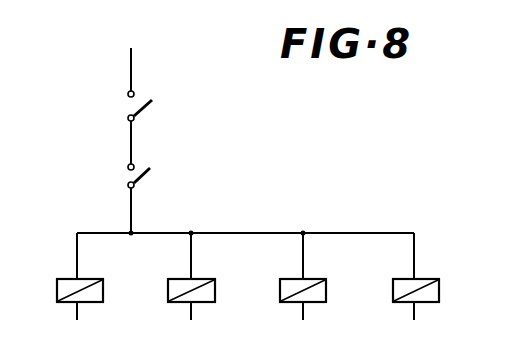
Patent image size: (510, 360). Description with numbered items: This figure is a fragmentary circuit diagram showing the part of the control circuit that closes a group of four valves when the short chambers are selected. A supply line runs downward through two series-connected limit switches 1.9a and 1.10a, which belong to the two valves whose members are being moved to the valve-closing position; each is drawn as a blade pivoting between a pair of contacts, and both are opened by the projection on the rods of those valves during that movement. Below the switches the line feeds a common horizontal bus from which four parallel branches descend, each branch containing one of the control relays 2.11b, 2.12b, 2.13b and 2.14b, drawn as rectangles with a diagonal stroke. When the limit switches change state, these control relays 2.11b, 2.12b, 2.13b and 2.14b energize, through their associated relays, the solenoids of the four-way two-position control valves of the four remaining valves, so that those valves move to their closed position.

The limit switch 1.9a is at (146, 119).
The limit switch 1.10a is at (140, 185).
The control relay 2.11b is at (104, 291).
The control relay 2.12b is at (216, 291).
The control relay 2.13b is at (354, 268).
The control relay 2.14b is at (467, 268).